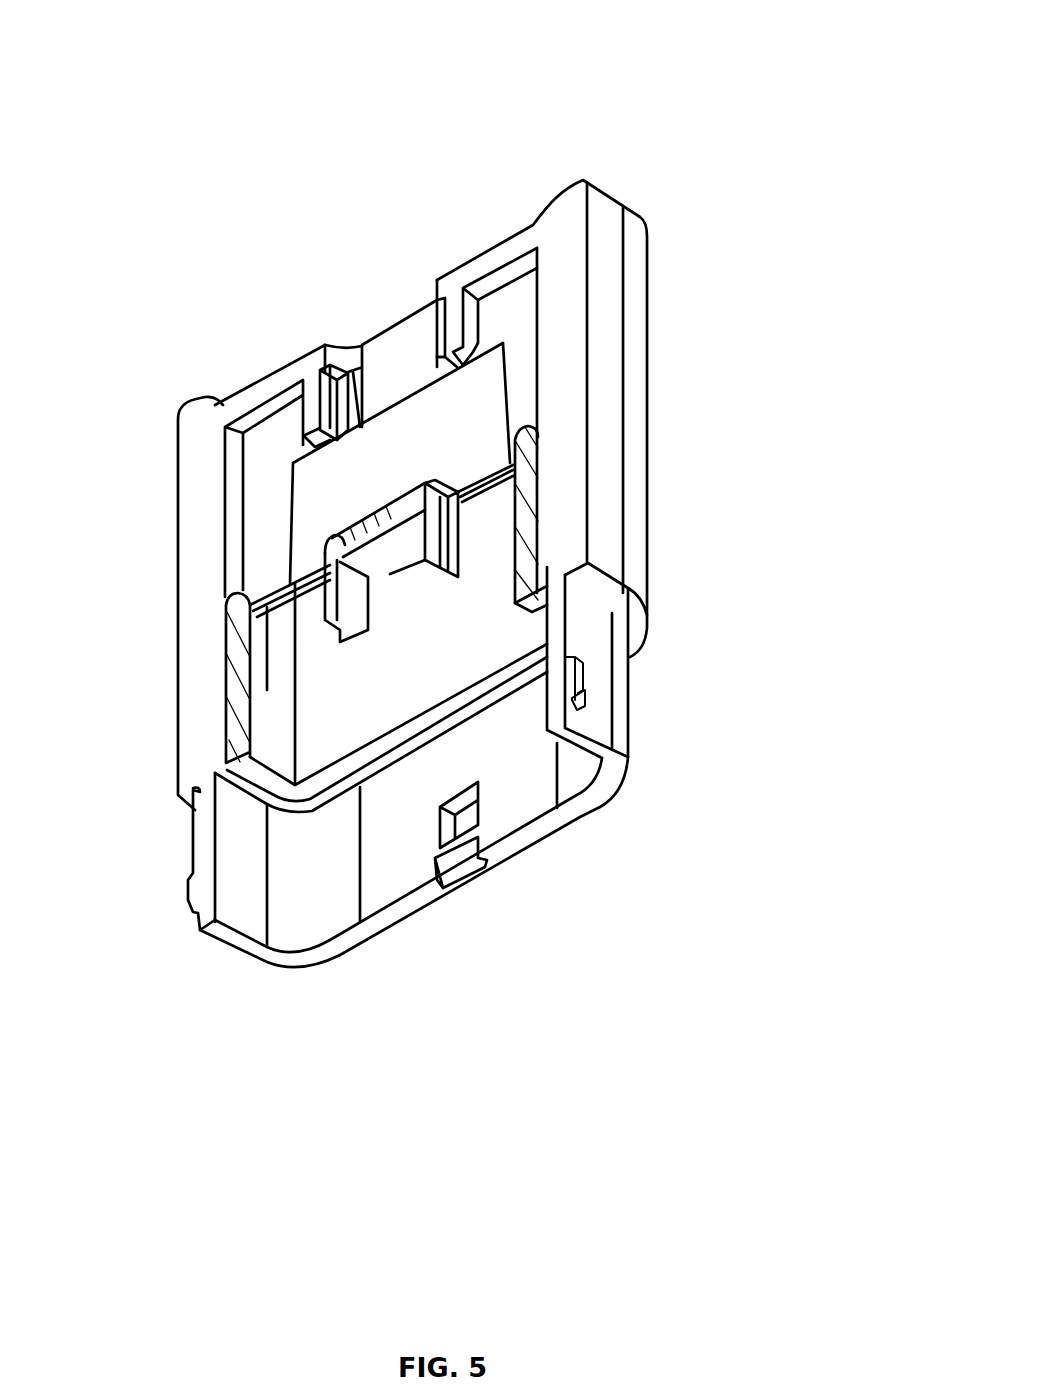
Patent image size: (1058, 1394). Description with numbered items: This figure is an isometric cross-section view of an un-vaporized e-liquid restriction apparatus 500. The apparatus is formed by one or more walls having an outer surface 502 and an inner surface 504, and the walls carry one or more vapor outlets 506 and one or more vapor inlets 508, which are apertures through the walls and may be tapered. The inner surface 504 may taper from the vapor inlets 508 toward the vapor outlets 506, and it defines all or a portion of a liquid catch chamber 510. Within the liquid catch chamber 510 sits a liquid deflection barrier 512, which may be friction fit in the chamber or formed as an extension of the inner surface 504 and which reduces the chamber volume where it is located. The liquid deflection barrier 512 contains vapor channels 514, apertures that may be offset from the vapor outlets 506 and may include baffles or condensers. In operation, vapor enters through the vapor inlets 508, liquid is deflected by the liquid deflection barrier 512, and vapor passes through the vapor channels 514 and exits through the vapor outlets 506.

The un-vaporized e-liquid restriction apparatus 500 is at (825, 60).
The outer surface 502 is at (175, 463).
The inner surface 504 is at (230, 520).
The vapor outlets 506 is at (360, 347).
The vapor inlets 508 is at (320, 898).
The liquid catch chamber 510 is at (332, 498).
The liquid deflection barrier 512 is at (417, 487).
The vapor channels 514 is at (487, 530).